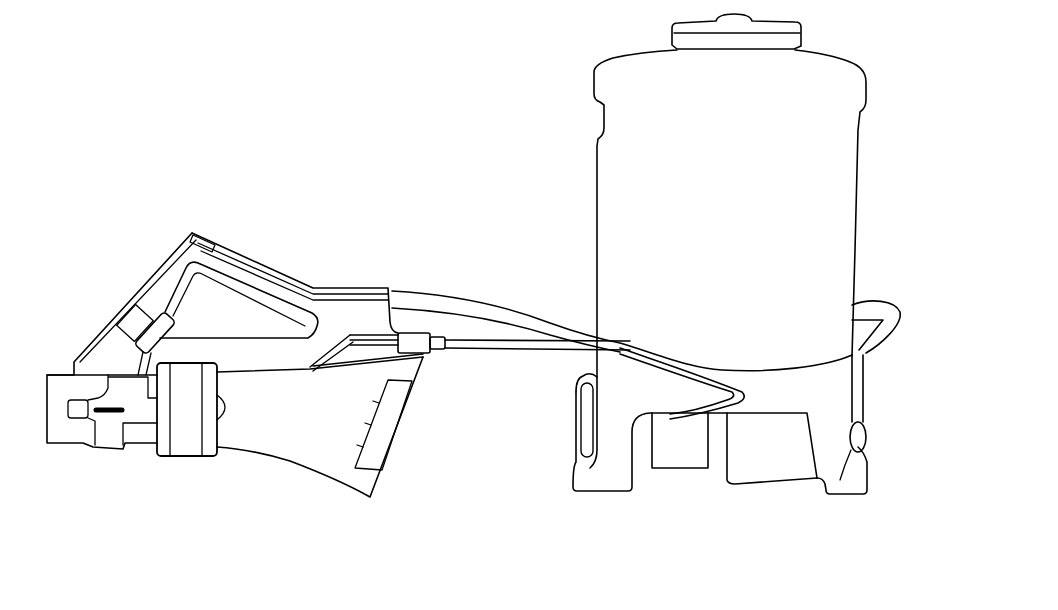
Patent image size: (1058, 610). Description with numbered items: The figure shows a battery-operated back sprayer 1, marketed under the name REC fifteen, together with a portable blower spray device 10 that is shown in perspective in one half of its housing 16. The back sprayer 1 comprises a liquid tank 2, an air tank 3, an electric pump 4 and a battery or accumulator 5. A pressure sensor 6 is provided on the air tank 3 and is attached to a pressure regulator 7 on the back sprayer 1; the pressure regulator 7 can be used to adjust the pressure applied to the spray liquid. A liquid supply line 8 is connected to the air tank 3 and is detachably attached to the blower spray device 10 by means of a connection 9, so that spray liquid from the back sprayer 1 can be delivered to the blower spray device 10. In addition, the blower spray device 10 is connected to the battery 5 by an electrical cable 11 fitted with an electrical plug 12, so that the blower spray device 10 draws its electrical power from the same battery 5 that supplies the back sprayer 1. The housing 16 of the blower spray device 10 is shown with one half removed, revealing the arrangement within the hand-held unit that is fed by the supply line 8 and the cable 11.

The back sprayer 1 is at (583, 166).
The liquid tank 2 is at (612, 165).
The air tank 3 is at (858, 442).
The electric pump 4 is at (752, 448).
The battery 5 is at (653, 453).
The pressure sensor 6 is at (592, 372).
The pressure regulator 7 is at (585, 398).
The liquid supply line 8 is at (430, 297).
The connection 9 is at (388, 285).
The blower spray device 10 is at (97, 559).
The electrical cable 11 is at (495, 341).
The electrical plug 12 is at (672, 421).
The housing 16 is at (231, 474).